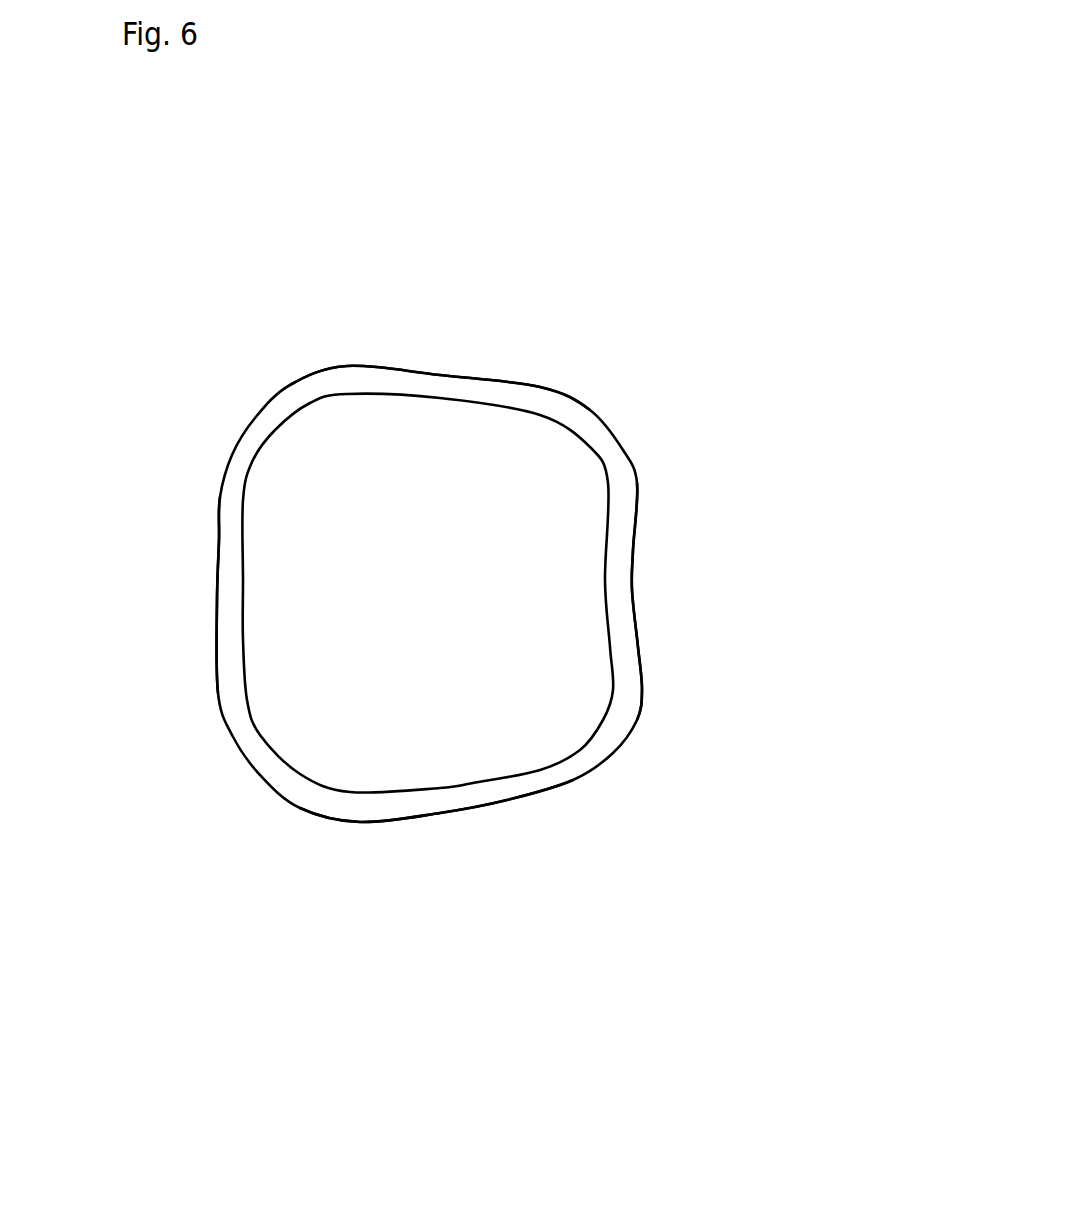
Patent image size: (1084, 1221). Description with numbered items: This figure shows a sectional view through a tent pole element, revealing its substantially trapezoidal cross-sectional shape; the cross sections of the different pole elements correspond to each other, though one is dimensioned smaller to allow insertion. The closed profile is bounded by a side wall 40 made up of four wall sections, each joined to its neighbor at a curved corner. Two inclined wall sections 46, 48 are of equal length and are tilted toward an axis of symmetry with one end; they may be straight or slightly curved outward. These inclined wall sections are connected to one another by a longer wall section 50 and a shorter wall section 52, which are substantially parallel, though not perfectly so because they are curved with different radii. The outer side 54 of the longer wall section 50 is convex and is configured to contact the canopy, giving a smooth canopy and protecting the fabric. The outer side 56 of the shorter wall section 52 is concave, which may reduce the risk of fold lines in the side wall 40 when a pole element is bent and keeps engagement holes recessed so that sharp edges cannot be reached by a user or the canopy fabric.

The side wall 40 is at (627, 473).
The inclined wall section 46 is at (436, 810).
The inclined wall section 48 is at (443, 378).
The longer wall section 50 is at (226, 662).
The shorter wall section 52 is at (625, 652).
The outer side 54 is at (213, 530).
The outer side 56 is at (640, 530).